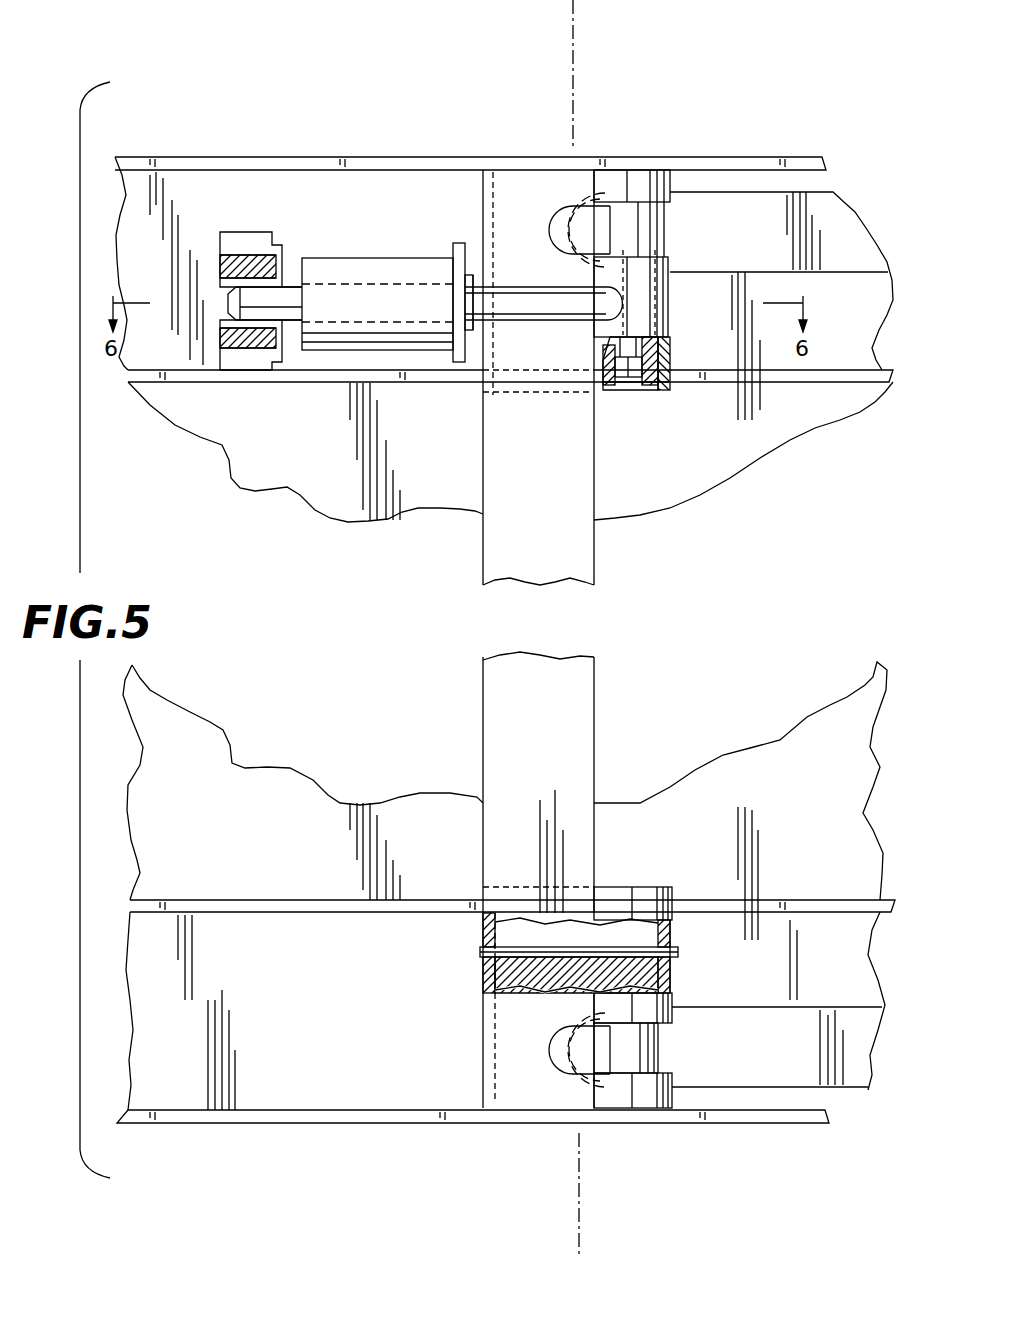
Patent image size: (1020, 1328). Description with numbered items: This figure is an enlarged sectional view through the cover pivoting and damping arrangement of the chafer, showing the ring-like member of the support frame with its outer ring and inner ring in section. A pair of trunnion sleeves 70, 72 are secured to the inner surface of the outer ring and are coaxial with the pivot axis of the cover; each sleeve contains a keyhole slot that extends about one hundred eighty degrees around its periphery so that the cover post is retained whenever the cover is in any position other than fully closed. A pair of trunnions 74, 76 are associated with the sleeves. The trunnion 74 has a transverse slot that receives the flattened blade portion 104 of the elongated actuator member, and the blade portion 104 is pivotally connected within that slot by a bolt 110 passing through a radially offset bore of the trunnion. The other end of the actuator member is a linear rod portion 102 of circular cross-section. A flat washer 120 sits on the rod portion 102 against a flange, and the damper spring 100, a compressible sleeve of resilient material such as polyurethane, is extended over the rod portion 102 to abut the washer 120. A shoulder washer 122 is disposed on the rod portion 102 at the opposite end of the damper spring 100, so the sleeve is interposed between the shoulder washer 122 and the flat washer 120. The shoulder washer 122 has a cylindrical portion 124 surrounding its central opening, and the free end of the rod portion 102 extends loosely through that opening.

The trunnion sleeve 70 is at (600, 178).
The trunnion sleeve 72 is at (612, 897).
The trunnion 74 is at (643, 227).
The trunnion 76 is at (635, 1047).
The damper spring 100 is at (403, 270).
The rod portion 102 is at (285, 295).
The blade portion 104 is at (525, 300).
The bolt 110 is at (630, 380).
The flat washer 120 is at (463, 384).
The shoulder washer 122 is at (282, 248).
The cylindrical portion 124 is at (248, 352).